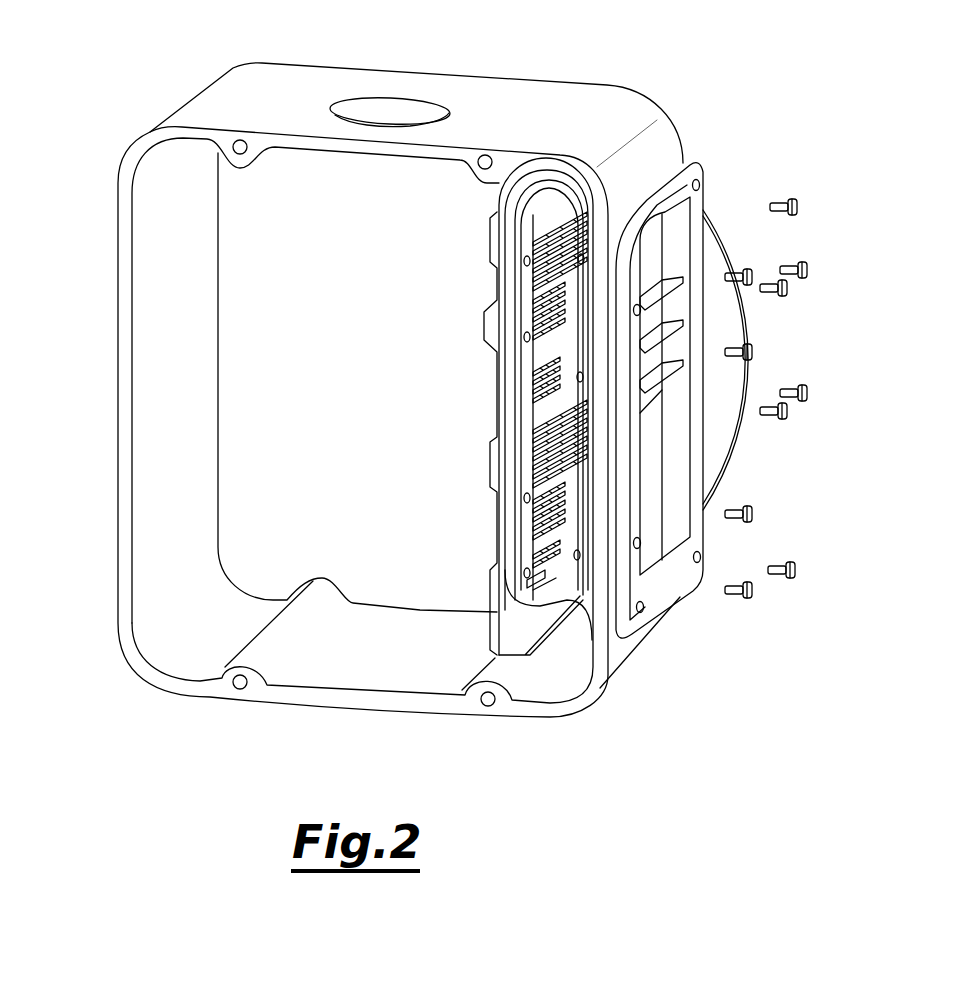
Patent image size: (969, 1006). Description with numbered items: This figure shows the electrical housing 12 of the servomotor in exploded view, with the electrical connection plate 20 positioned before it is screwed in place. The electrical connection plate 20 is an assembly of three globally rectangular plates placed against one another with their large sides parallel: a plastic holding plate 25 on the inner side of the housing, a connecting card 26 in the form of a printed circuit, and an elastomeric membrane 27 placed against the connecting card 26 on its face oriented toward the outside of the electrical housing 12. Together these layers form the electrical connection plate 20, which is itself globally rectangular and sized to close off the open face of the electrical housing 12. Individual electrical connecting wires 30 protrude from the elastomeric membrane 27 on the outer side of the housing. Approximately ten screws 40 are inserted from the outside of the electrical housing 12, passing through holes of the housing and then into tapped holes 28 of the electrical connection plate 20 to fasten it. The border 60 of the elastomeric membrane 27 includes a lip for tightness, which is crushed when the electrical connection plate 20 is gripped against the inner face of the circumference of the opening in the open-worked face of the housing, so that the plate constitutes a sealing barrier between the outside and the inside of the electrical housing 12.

The electrical housing 12 is at (497, 98).
The electrical connection plate 20 is at (427, 448).
The plastic holding plate 25 is at (489, 308).
The connecting card 26 is at (500, 205).
The elastomeric membrane 27 is at (508, 388).
The tapped holes 28 is at (524, 261).
The individual electrical connecting wires 30 is at (583, 213).
The screws 40 is at (800, 208).
The border of the elastomeric membrane 60 is at (525, 588).